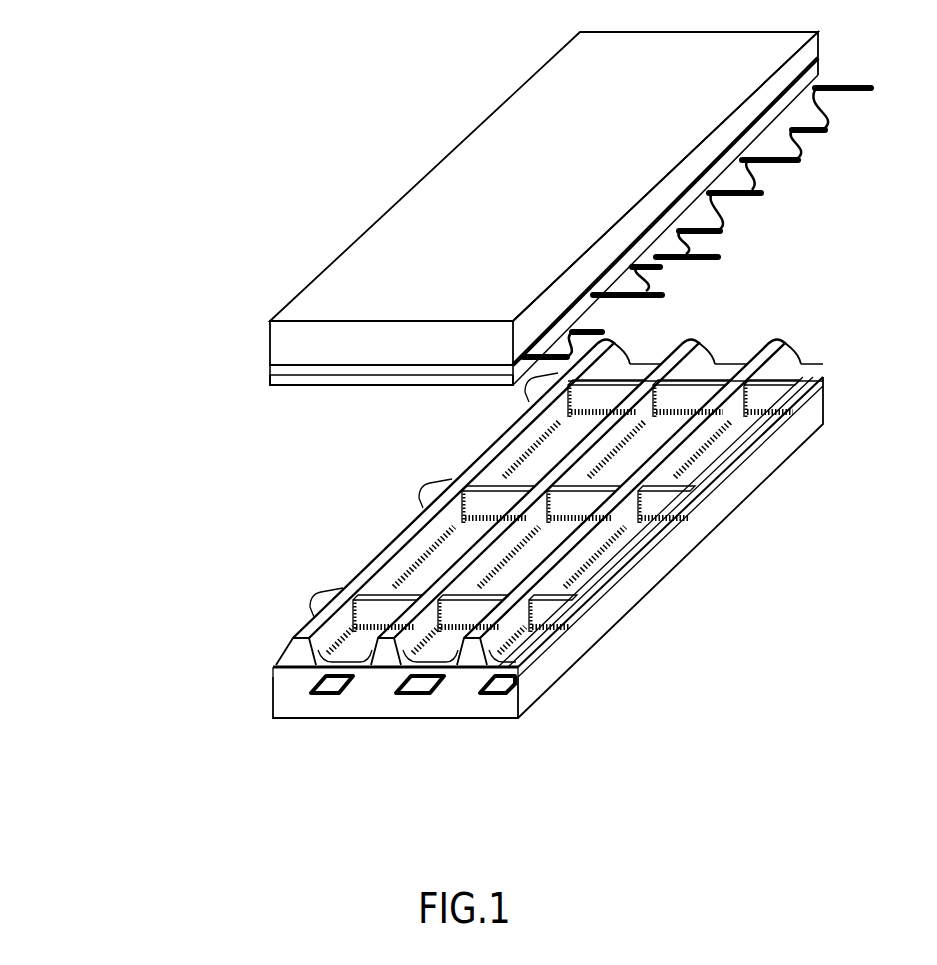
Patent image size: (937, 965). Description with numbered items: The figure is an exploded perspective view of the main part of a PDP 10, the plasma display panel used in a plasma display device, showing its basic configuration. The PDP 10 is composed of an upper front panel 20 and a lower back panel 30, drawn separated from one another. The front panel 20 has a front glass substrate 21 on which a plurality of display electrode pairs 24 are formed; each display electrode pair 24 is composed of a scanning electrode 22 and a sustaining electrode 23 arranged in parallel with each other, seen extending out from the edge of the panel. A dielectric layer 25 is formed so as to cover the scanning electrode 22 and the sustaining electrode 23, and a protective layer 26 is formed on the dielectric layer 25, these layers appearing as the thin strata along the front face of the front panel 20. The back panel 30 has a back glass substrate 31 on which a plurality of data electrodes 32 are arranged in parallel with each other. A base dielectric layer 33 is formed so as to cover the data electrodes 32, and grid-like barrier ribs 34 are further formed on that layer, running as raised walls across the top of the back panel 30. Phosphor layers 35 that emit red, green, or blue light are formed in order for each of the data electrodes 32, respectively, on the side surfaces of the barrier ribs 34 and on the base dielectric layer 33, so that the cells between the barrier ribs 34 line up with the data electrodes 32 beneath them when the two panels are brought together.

The PDP 10 is at (467, 413).
The front panel 20 is at (509, 232).
The front glass substrate 21 is at (270, 343).
The dielectric layer 25 is at (270, 375).
The protective layer 26 is at (270, 386).
The scanning electrode 22 is at (806, 139).
The sustaining electrode 23 is at (749, 216).
The display electrode pair 24 is at (714, 222).
The back panel 30 is at (495, 562).
The back glass substrate 31 is at (270, 697).
The base dielectric layer 33 is at (272, 668).
The phosphor layer 35 is at (283, 652).
The barrier rib 34 is at (796, 363).
The data electrode 32 is at (493, 692).